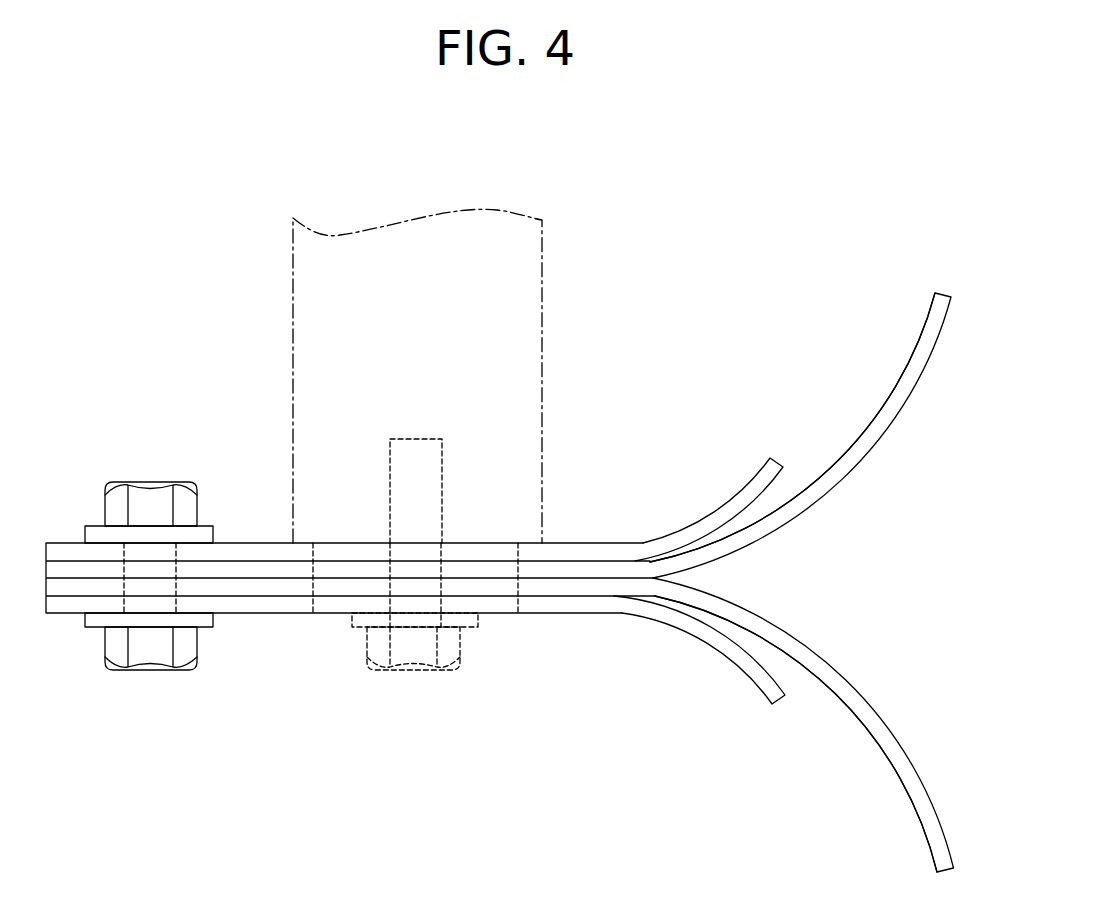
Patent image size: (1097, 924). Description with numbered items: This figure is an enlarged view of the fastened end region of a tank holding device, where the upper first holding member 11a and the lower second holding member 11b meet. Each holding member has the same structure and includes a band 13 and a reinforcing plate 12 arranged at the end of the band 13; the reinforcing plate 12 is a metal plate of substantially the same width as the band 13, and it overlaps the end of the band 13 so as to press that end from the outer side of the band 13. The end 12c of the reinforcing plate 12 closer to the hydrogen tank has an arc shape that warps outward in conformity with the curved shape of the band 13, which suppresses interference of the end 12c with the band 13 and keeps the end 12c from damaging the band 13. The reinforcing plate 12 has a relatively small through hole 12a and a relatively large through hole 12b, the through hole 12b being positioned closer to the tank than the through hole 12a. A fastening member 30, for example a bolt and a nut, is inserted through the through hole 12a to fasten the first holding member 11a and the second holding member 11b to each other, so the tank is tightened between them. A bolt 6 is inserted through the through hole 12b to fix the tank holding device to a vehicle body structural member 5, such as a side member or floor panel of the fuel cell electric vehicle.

The vehicle body structural member 5 is at (513, 279).
The bolt 6 is at (400, 670).
The first holding member 11a is at (916, 318).
The second holding member 11b is at (912, 846).
The reinforcing plate 12 is at (254, 543).
The through hole 12a is at (124, 601).
The through hole 12b is at (518, 600).
The end of the reinforcing plate 12c is at (748, 482).
The band 13 is at (884, 390).
The fastening member 30 is at (163, 482).